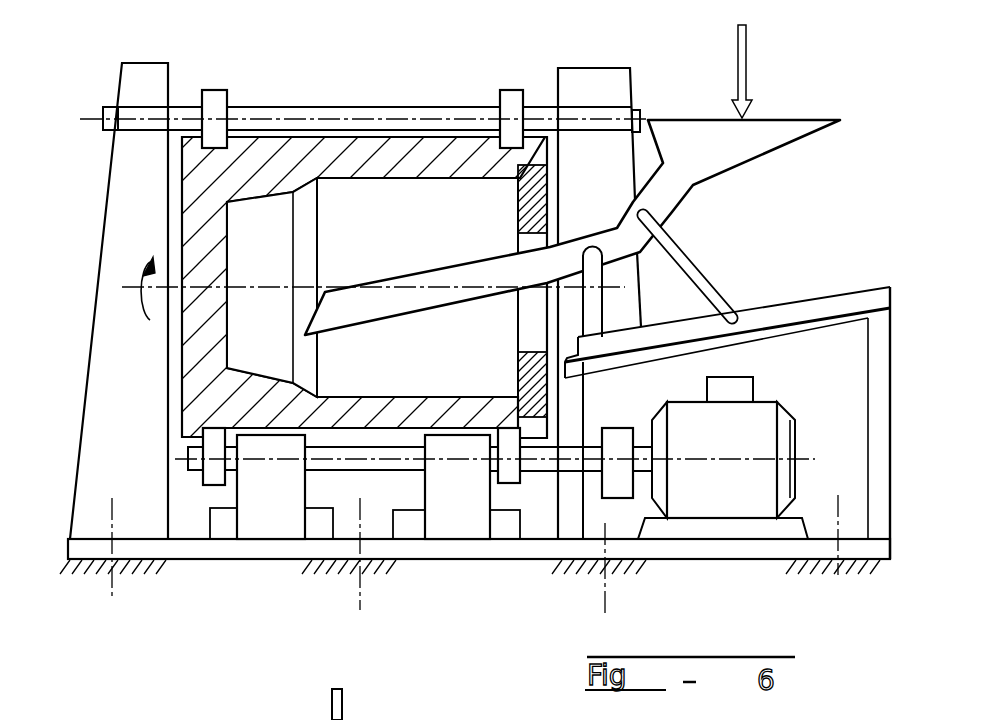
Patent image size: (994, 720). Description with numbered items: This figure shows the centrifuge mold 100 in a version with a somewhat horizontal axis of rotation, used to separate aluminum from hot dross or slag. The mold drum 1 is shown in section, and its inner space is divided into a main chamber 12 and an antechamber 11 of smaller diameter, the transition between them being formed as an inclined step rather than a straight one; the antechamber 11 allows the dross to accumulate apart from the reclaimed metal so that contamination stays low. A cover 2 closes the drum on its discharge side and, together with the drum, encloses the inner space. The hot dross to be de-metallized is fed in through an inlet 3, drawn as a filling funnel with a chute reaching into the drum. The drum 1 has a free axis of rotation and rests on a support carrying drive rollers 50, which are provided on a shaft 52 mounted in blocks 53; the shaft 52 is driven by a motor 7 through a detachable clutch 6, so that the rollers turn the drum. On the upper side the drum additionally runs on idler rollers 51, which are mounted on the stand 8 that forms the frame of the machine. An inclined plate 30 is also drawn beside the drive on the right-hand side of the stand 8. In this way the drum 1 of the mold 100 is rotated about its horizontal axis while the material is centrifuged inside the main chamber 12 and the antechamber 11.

The mold drum 1 is at (363, 163).
The cover 2 is at (525, 385).
The inlet 3 is at (698, 153).
The detachable clutch 6 is at (612, 447).
The motor 7 is at (723, 458).
The stand 8 is at (120, 358).
The antechamber 11 is at (263, 254).
The main chamber 12 is at (388, 230).
The inclined plate 30 is at (822, 290).
The drive rollers 50 is at (213, 467).
The idler rollers 51 is at (230, 95).
The shaft 52 is at (350, 460).
The blocks 53 is at (280, 492).
The centrifuge mold 100 is at (176, 228).